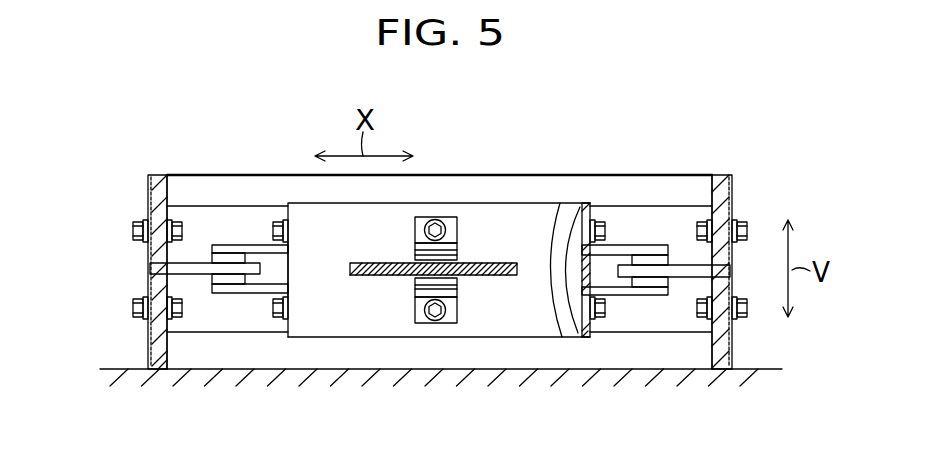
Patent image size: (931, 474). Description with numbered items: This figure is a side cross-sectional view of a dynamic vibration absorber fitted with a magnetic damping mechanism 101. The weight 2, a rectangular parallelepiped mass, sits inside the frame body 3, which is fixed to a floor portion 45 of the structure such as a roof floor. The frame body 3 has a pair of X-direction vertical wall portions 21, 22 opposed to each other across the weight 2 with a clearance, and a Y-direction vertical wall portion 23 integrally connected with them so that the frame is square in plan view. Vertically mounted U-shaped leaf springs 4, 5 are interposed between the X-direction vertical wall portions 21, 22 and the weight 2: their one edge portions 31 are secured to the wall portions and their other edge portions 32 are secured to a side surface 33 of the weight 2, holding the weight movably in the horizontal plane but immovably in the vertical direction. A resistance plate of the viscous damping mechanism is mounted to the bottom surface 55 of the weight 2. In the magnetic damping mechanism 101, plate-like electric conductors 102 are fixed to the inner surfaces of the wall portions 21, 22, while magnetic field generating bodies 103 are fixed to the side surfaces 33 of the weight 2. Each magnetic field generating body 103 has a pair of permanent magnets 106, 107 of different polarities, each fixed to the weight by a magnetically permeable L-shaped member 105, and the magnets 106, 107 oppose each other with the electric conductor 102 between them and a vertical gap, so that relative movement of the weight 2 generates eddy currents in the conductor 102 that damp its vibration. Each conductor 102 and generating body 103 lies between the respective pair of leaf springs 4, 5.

The weight 2 is at (463, 203).
The frame body 3 is at (144, 187).
The leaf spring 4 is at (218, 228).
The leaf spring 5 is at (660, 235).
The X-direction vertical wall portion 21 is at (148, 268).
The X-direction vertical wall portion 22 is at (732, 271).
The Y-direction vertical wall portion 23 is at (617, 190).
The one edge portion 31 is at (176, 287).
The other edge portion 32 is at (267, 293).
The side surface 33 is at (270, 245).
The floor portion 45 is at (127, 380).
The bottom surface 55 is at (320, 338).
The magnetic damping mechanism 101 is at (468, 229).
The electric conductor 102 is at (162, 180).
The magnetic field generating body 103 is at (231, 236).
The L-shaped member 105 is at (427, 217).
The permanent magnet 106 is at (210, 258).
The permanent magnet 107 is at (225, 293).